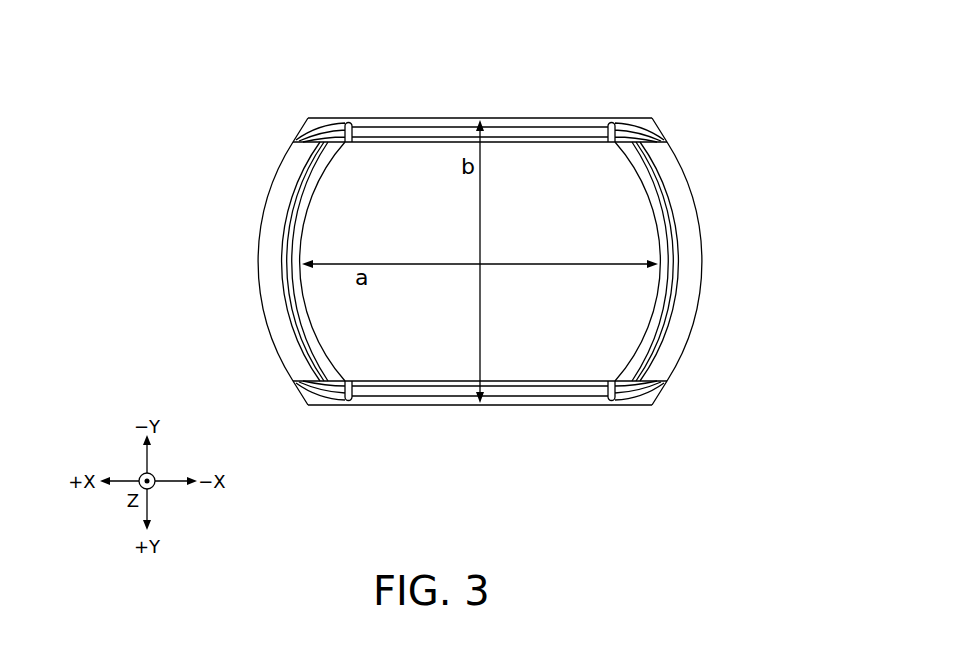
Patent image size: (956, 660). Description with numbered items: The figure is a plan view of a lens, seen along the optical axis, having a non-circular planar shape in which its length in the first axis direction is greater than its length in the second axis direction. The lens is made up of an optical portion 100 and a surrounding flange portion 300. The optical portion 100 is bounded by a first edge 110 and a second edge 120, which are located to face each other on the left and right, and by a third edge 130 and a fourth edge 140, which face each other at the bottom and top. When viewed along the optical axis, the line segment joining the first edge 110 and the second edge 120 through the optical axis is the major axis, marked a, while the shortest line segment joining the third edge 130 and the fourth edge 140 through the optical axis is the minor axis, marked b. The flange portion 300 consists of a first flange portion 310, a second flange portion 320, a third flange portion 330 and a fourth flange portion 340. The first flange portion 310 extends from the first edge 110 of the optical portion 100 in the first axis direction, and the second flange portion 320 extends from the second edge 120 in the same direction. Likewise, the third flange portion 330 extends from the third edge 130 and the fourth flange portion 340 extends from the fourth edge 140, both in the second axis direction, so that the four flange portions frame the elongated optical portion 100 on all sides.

The optical portion 100 is at (397, 368).
The first edge 110 is at (290, 285).
The second edge 120 is at (670, 285).
The third edge 130 is at (517, 393).
The fourth edge 140 is at (517, 130).
The flange portion 300 is at (482, 247).
The first flange portion 310 is at (293, 245).
The second flange portion 320 is at (670, 243).
The third flange portion 330 is at (572, 392).
The fourth flange portion 340 is at (573, 132).